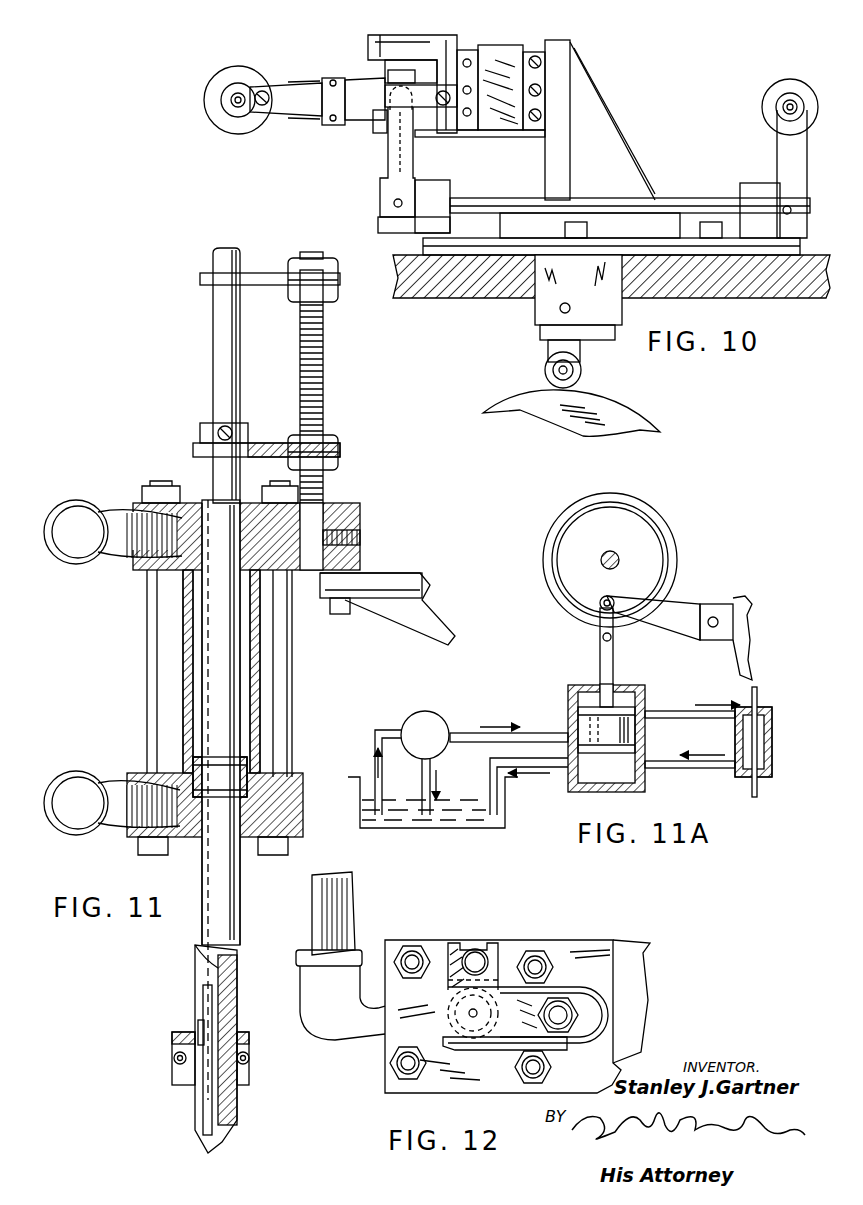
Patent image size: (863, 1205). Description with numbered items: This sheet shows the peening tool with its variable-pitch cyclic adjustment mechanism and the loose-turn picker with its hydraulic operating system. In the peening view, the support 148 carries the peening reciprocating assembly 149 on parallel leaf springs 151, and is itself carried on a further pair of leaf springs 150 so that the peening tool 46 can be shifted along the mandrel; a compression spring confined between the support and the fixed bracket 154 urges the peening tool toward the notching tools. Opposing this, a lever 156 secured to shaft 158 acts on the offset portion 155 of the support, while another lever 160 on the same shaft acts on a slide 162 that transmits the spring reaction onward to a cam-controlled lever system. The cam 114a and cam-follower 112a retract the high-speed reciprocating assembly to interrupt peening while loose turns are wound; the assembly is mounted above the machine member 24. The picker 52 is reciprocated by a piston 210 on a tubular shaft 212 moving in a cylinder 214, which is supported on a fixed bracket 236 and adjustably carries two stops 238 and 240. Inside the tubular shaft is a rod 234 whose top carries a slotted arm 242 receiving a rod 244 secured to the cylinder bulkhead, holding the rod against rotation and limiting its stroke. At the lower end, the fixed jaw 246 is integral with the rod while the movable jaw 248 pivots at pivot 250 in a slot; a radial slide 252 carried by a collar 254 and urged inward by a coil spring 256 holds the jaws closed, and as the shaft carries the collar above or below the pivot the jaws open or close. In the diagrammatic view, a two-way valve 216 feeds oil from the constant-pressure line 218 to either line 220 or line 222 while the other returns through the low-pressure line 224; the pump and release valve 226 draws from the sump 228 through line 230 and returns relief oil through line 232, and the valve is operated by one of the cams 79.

In FIG. 10, the peening tool 46 is at (248, 68).
In FIG. 10, the peening reciprocating assembly 149 is at (302, 63).
In FIG. 10, the support 148 is at (400, 40).
In FIG. 10, the leaf springs 151 is at (383, 66).
In FIG. 10, the leaf springs 150 is at (510, 44).
In FIG. 10, the offset portion 155 is at (430, 108).
In FIG. 10, the lever 156 is at (394, 151).
In FIG. 10, the fixed bracket 154 is at (618, 138).
In FIG. 10, the shaft 158 is at (696, 203).
In FIG. 10, the slide 162 is at (778, 104).
In FIG. 10, the lever 160 is at (793, 168).
In FIG. 10, the table 24 is at (473, 298).
In FIG. 10, the cam-follower 112a is at (578, 350).
In FIG. 10, the cam 114a is at (606, 403).
In FIG. 11, the rod 244 is at (210, 308).
In FIG. 12, the rod 244 is at (470, 948).
In FIG. 11, the stop 238 is at (198, 271).
In FIG. 12, the stop 238 is at (545, 996).
In FIG. 11, the stop 240 is at (198, 443).
In FIG. 12, the stop 240 is at (443, 1038).
In FIG. 11, the arm 242 is at (198, 421).
In FIG. 12, the arm 242 is at (498, 944).
In FIG. 11, the line 220 is at (108, 486).
In FIG. 11A, the line 220 is at (703, 718).
In FIG. 12, the line 220 is at (350, 928).
In FIG. 11, the rod 234 is at (206, 468).
In FIG. 11, the shaft 212 is at (237, 628).
In FIG. 11A, the shaft 212 is at (755, 784).
In FIG. 11, the cylinder 214 is at (258, 656).
In FIG. 11A, the cylinder 214 is at (771, 709).
In FIG. 11, the fixed bracket 236 is at (394, 576).
In FIG. 12, the fixed bracket 236 is at (638, 986).
In FIG. 11, the line 222 is at (101, 756).
In FIG. 11A, the line 222 is at (720, 757).
In FIG. 11, the piston 210 is at (253, 768).
In FIG. 11A, the piston 210 is at (760, 748).
In FIG. 11, the picker 52 is at (242, 944).
In FIG. 11, the jaw 246 is at (220, 1124).
In FIG. 11, the jaw 248 is at (198, 1116).
In FIG. 11, the pivot 250 is at (194, 1021).
In FIG. 11, the radial slide 252 is at (173, 1048).
In FIG. 11, the collar 254 is at (249, 1039).
In FIG. 11, the coil spring 256 is at (249, 1058).
In FIG. 11A, the cam 79 is at (673, 548).
In FIG. 11A, the two-way valve 216 is at (645, 787).
In FIG. 11A, the constant-pressure line 218 is at (466, 729).
In FIG. 11A, the constant-pressure pump and release valve 226 is at (414, 709).
In FIG. 11A, the line 230 is at (371, 766).
In FIG. 11A, the line 232 is at (436, 761).
In FIG. 11A, the return low-pressure line 224 is at (548, 771).
In FIG. 11A, the sump 228 is at (356, 818).